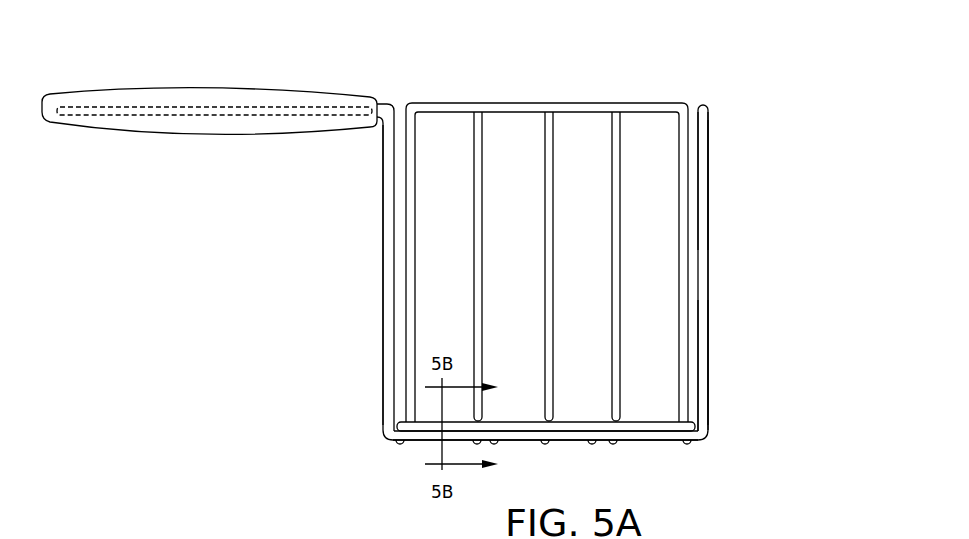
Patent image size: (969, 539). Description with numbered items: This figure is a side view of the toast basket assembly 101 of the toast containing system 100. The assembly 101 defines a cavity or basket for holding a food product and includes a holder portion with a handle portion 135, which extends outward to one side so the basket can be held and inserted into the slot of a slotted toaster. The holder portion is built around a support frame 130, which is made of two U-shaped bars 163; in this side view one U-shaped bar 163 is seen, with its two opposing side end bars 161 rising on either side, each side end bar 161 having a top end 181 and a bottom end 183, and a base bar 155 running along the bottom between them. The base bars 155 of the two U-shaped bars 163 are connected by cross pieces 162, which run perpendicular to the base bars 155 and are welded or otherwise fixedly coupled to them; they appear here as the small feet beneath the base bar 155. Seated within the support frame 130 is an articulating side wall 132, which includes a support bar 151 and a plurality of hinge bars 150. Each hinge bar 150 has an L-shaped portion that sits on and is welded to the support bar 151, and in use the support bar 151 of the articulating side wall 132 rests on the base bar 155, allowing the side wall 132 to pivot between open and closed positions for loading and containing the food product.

The toast containing system 100 is at (490, 66).
The toast basket assembly 101 is at (612, 84).
The support frame 130 is at (708, 170).
The articulating side wall 132 is at (639, 316).
The handle portion 135 is at (307, 90).
The hinge bar 150 is at (470, 145).
The support bar 151 is at (660, 421).
The base bar 155 is at (654, 441).
The side end bar 161 is at (383, 219).
The cross piece 162 is at (500, 450).
The U-shaped bar 163 is at (383, 316).
The top end 181 is at (726, 118).
The bottom end 183 is at (723, 412).